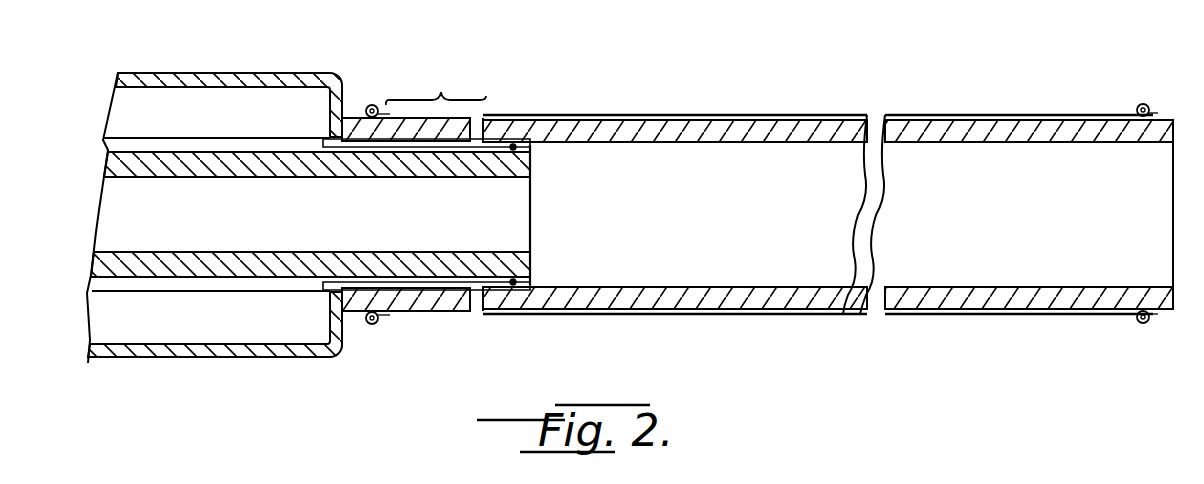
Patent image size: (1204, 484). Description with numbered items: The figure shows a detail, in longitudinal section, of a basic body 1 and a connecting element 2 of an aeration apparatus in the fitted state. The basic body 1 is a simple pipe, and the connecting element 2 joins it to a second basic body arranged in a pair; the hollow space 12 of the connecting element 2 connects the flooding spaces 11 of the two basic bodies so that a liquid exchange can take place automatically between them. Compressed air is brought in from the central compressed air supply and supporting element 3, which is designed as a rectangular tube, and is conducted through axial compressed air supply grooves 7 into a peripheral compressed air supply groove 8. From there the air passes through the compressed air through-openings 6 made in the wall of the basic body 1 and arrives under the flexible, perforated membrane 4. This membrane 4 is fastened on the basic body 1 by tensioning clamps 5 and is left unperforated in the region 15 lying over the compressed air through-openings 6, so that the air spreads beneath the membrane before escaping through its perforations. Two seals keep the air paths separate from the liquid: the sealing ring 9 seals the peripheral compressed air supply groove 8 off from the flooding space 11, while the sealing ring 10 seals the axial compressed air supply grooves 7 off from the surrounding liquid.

The basic body 1 is at (742, 310).
The connecting element 2 is at (533, 262).
The central compressed air supply and supporting element 3 is at (165, 73).
The flexible, perforated membrane 4 is at (716, 115).
The tensioning clamps 5 is at (1143, 104).
The compressed air through-openings 6 is at (477, 130).
The axial compressed air supply grooves 7 is at (228, 142).
The peripheral compressed air supply groove 8 is at (490, 146).
The sealing ring 9 is at (516, 285).
The sealing ring 10 is at (345, 136).
The flooding space 11 is at (770, 217).
The hollow space 12 is at (402, 227).
The unperforated region 15 is at (441, 92).